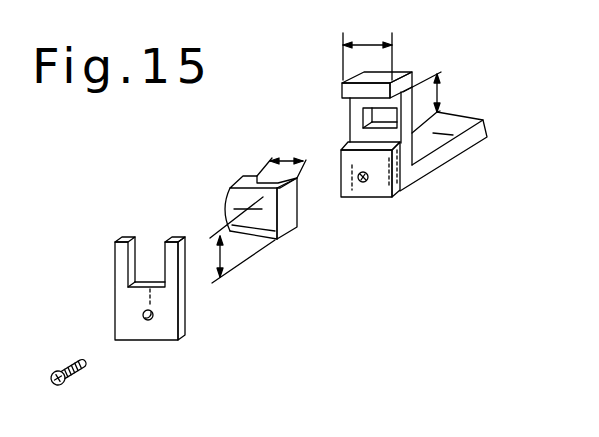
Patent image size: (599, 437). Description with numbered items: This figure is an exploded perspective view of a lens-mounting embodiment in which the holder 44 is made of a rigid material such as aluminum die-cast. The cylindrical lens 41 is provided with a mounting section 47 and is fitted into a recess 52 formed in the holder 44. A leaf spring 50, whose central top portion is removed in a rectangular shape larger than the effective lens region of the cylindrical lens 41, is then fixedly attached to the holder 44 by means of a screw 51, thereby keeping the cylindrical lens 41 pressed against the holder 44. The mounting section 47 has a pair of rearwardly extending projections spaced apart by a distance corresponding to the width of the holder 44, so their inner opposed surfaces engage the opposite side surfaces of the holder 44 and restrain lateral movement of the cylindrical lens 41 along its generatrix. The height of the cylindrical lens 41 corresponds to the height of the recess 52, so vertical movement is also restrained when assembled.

The holder 44 is at (453, 153).
The recess 52 is at (350, 125).
The cylindrical lens 41 is at (278, 242).
The mounting section 47 is at (292, 205).
The leaf spring 50 is at (115, 307).
The screw 51 is at (90, 368).